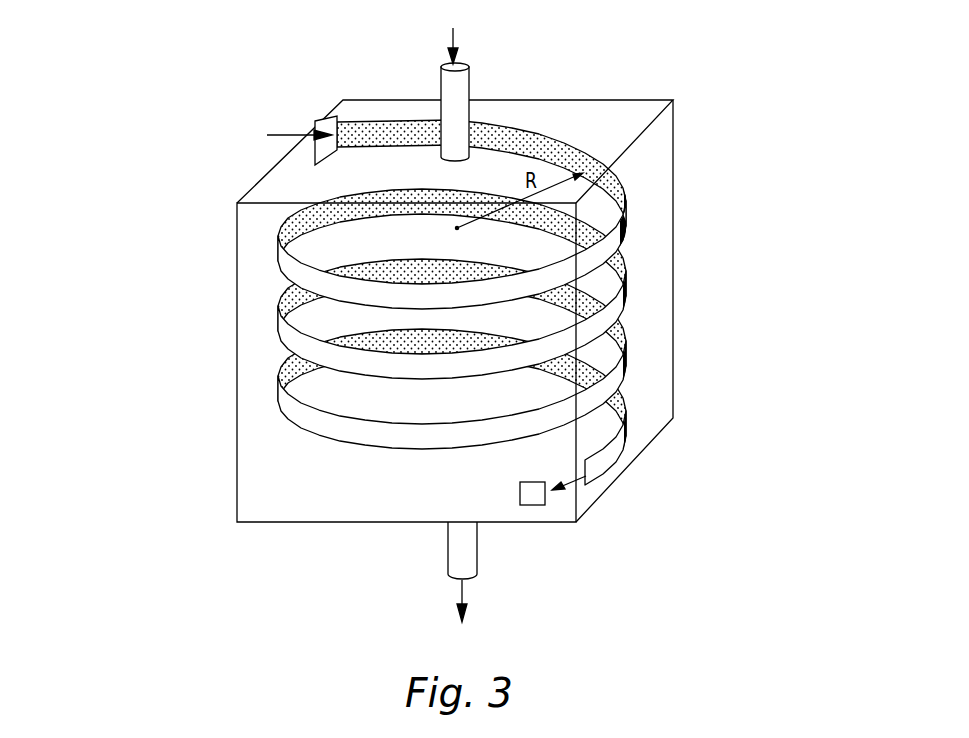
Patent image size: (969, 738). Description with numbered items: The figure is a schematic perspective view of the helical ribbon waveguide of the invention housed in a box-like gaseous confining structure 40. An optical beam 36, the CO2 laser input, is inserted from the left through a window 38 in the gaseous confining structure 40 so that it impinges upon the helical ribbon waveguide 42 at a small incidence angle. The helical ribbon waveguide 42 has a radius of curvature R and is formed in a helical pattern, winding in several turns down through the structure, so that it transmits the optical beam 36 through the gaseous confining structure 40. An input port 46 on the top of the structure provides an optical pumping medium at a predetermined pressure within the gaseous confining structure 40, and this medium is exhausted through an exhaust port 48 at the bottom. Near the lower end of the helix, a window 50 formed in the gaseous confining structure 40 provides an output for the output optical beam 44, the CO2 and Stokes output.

The optical beam 36 is at (290, 134).
The window 38 is at (315, 152).
The gaseous confining structure 40 is at (673, 276).
The helical ribbon waveguide 42 is at (520, 137).
The output optical beam 44 is at (568, 486).
The input port 46 is at (443, 82).
The exhaust port 48 is at (453, 559).
The window 50 is at (532, 497).